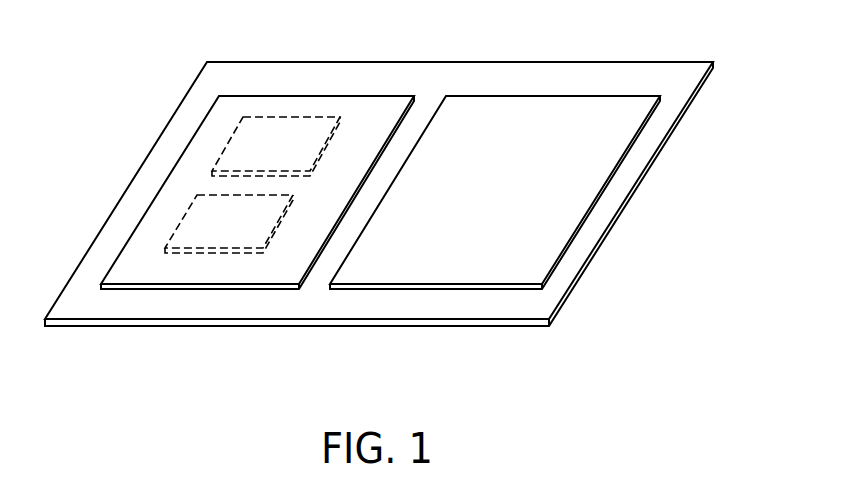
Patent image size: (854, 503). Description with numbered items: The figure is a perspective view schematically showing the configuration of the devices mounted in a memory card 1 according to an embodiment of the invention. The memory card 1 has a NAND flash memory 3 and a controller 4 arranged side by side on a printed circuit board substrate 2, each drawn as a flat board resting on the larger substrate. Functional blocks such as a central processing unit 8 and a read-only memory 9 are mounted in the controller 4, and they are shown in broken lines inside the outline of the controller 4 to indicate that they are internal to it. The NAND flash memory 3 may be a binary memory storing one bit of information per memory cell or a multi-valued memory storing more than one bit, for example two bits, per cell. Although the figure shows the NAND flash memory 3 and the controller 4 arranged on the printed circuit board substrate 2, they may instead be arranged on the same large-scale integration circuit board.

The memory card 1 is at (653, 258).
The printed circuit board substrate 2 is at (639, 77).
The NAND flash memory 3 is at (497, 273).
The controller 4 is at (228, 270).
The central processing unit 8 is at (180, 222).
The read-only memory 9 is at (227, 143).